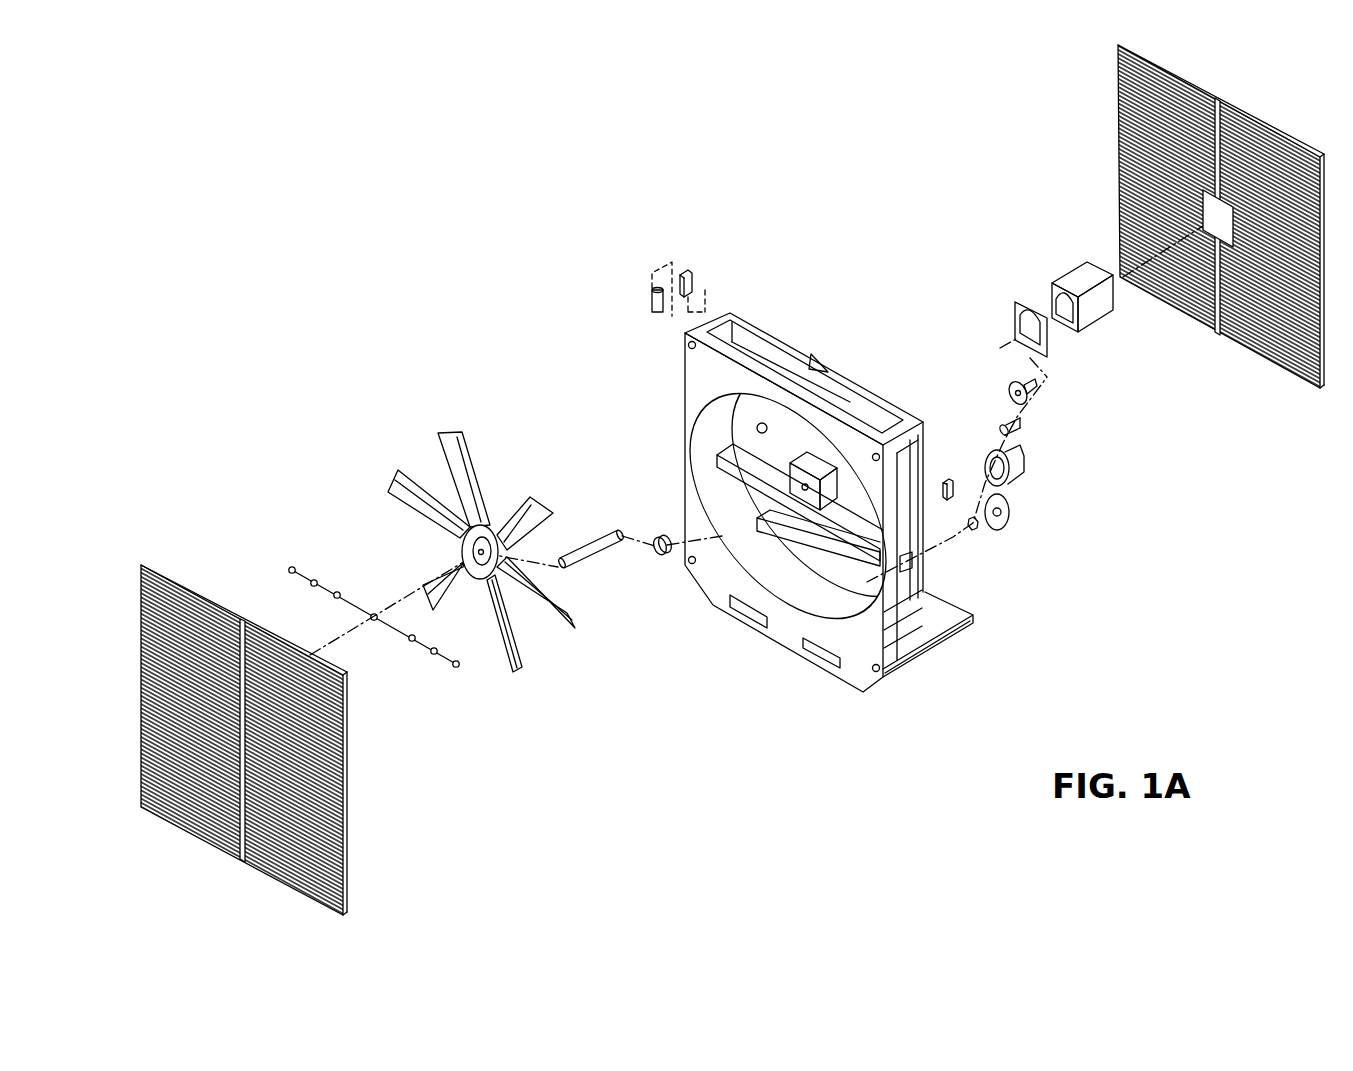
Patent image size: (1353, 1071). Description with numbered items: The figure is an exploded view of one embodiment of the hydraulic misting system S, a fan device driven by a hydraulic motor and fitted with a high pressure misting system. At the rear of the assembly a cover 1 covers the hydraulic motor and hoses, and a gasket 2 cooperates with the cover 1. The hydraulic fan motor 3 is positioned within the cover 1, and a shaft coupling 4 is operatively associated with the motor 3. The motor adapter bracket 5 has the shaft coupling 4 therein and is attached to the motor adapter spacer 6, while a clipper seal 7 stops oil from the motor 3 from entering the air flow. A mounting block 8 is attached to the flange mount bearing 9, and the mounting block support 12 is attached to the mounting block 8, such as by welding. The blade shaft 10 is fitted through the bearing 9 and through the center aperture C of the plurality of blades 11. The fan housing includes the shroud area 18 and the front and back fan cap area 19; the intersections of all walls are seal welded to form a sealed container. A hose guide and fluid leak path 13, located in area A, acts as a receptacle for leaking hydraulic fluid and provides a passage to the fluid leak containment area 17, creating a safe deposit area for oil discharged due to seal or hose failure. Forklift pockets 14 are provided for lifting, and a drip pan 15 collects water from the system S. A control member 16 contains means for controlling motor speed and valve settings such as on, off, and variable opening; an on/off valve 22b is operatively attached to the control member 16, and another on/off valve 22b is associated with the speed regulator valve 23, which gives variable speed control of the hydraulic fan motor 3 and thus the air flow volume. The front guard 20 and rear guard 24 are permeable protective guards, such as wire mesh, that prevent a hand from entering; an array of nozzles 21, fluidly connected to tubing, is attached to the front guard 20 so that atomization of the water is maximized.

The cover 1 is at (1068, 272).
The gasket 2 is at (1015, 308).
The hydraulic fan motor 3 is at (1030, 395).
The shaft coupling 4 is at (1022, 428).
The motor adapter bracket 5 is at (1012, 475).
The motor adapter spacer 6 is at (1010, 522).
The clipper seal 7 is at (975, 527).
The mounting block 8 is at (800, 458).
The flange mount bearing 9 is at (655, 538).
The blade shaft 10 is at (587, 562).
The blades 11 is at (473, 463).
The mounting block support 12 is at (727, 426).
The hose guide and fluid leak path 13 is at (903, 562).
The forklift pockets 14 is at (820, 655).
The drip pan 15 is at (968, 615).
The control member 16 is at (720, 333).
The fluid leak containment area 17 is at (890, 653).
The shroud area 18 is at (792, 608).
The fan cap area 19 is at (863, 652).
The front guard 20 is at (348, 813).
The nozzles 21 is at (290, 567).
The on/off valve 22b is at (652, 300).
The speed regulator valve 23 is at (690, 274).
The rear guard 24 is at (1248, 113).
The hydraulic misting system S is at (484, 295).
The center aperture C is at (478, 552).
The area A is at (957, 636).